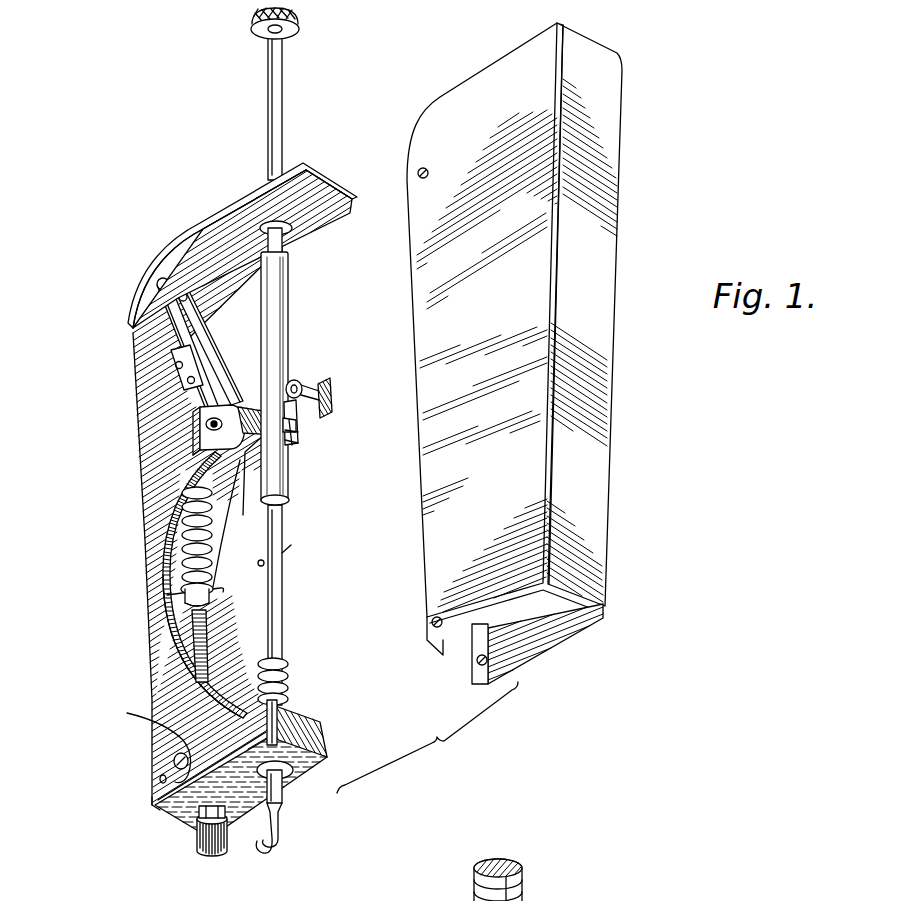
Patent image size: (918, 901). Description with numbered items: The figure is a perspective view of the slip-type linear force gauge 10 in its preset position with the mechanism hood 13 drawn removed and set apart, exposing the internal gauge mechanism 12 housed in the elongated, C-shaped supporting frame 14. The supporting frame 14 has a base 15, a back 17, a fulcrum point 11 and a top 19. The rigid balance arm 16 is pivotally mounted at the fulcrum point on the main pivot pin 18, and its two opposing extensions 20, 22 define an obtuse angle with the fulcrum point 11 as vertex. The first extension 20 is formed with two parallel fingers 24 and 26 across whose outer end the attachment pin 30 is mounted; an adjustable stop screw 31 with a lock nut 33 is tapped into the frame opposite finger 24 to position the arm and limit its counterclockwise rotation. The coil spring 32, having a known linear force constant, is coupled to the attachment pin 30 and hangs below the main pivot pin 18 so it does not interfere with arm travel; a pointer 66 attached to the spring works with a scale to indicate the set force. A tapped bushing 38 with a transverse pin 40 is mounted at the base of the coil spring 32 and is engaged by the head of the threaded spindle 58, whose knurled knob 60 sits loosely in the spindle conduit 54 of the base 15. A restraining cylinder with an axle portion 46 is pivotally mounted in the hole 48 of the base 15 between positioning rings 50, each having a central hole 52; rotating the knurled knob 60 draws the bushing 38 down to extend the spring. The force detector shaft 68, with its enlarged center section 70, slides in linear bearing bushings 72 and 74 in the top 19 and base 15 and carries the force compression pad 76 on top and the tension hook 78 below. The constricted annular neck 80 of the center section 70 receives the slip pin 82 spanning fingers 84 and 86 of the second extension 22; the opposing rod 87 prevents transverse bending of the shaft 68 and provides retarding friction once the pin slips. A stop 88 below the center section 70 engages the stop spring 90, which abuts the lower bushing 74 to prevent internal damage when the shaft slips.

The slip-type linear force gauge 10 is at (136, 228).
The fulcrum point 11 is at (172, 448).
The internal gauge mechanism 12 is at (316, 326).
The mechanism hood 13 is at (604, 380).
The supporting frame 14 is at (95, 452).
The base 15 is at (322, 733).
The rigid balance arm 16 is at (240, 394).
The back 17 is at (150, 522).
The main pivot pin 18 is at (192, 424).
The top 19 is at (232, 208).
The first extension 20 is at (220, 348).
The second extension 22 is at (260, 400).
The finger 24 is at (200, 305).
The finger 26 is at (206, 326).
The attachment pin 30 is at (157, 286).
The adjustable stop screw 31 is at (187, 381).
The coil spring 32 is at (211, 600).
The lock nut 33 is at (175, 366).
The tapped bushing 38 is at (210, 612).
The transverse pin 40 is at (216, 583).
The axle portion 46 is at (176, 767).
The hole 48 is at (136, 741).
The positioning rings 50 is at (174, 759).
The central hole 52 is at (150, 806).
The spindle conduit 54 is at (197, 808).
The threaded spindle 58 is at (210, 668).
The knurled knob 60 is at (197, 845).
The pointer 66 is at (157, 612).
The force detector shaft 68 is at (283, 112).
The center section 70 is at (289, 285).
The linear bearing bushing 72 is at (294, 232).
The linear bearing bushing 74 is at (288, 778).
The force compression pad 76 is at (296, 38).
The tension hook 78 is at (283, 850).
The constricted annular neck 80 is at (300, 412).
The slip pin 82 is at (289, 450).
The finger 84 is at (289, 460).
The finger 86 is at (299, 437).
The opposing rod 87 is at (303, 384).
The stop 88 is at (294, 551).
The stop spring 90 is at (290, 673).